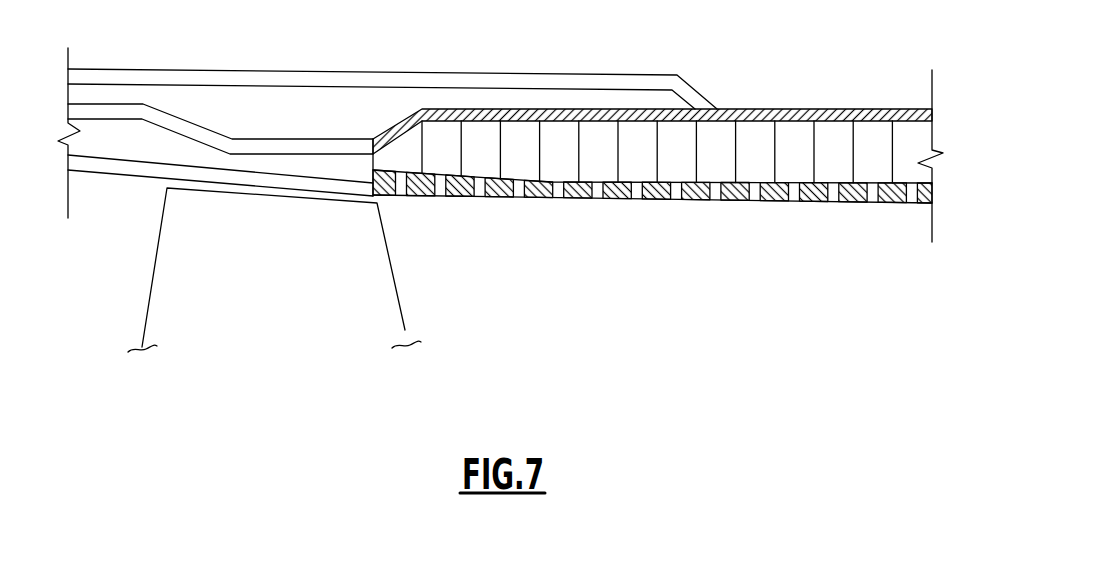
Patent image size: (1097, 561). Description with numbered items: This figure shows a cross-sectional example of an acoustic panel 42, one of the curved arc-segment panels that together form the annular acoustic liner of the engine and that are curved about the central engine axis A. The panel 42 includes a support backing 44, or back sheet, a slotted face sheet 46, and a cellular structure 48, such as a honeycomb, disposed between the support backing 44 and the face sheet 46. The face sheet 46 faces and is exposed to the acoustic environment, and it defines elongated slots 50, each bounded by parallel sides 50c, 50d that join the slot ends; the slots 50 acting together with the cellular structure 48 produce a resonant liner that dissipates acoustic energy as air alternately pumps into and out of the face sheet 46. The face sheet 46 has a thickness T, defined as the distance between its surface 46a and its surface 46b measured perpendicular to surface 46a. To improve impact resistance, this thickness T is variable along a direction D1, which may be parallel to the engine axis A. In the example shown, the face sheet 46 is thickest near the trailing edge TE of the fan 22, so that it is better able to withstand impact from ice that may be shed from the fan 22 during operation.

The fan 22 is at (190, 275).
The acoustic panel 42 is at (652, 170).
The support backing 44 is at (652, 170).
The face sheet 46 is at (652, 170).
The surface 46a is at (652, 238).
The surface 46b is at (587, 197).
The cellular structure 48 is at (720, 157).
The elongated slot 50 is at (652, 238).
The slot side 50c is at (525, 198).
The slot side 50d is at (513, 198).
The thickness T is at (402, 152).
The trailing edge TE is at (400, 307).
The engine axis A is at (640, 365).
The direction D1 is at (718, 349).